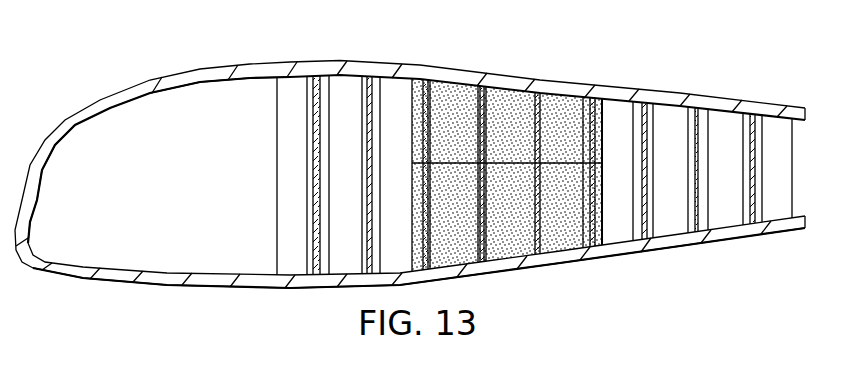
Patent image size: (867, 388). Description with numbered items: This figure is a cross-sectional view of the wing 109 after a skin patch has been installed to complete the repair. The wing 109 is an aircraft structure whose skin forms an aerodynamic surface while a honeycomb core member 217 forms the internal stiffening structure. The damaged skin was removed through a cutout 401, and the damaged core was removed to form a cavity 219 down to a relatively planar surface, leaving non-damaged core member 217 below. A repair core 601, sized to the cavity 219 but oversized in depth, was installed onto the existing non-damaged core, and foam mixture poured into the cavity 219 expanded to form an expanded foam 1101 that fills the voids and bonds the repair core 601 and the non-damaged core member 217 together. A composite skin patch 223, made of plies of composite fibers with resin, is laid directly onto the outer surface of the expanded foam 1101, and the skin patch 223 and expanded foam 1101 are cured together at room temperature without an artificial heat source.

The wing 109 is at (100, 84).
The core member 217 is at (277, 173).
The composite skin patch 223 is at (527, 80).
The cutout 401 is at (420, 72).
The expanded foam 1101 is at (507, 90).
The repair core 601 is at (600, 112).
The cavity 219 is at (558, 114).